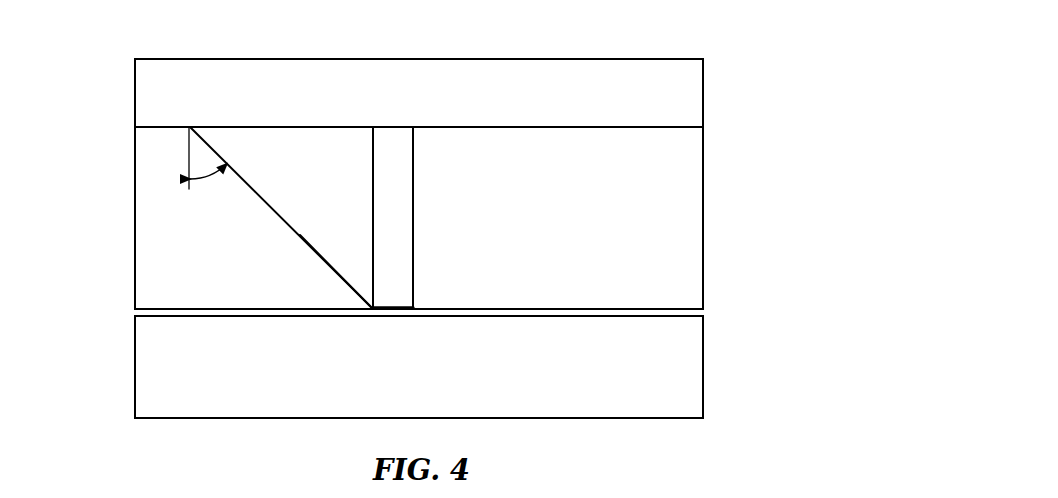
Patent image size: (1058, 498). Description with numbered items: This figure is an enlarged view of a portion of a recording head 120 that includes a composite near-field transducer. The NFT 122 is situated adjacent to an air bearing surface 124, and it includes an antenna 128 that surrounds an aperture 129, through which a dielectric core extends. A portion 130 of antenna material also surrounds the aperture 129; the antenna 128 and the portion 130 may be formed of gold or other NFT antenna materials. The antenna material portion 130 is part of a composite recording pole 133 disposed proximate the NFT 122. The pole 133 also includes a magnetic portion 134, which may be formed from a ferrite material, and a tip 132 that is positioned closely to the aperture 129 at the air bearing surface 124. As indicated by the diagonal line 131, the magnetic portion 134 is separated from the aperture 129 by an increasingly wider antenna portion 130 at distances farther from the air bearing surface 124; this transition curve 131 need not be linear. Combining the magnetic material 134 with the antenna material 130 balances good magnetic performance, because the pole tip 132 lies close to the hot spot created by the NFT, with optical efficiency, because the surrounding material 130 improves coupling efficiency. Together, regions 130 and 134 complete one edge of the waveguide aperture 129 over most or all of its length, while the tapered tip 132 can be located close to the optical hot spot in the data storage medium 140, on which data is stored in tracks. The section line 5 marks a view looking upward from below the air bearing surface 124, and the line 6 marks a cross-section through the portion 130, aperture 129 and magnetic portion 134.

The recording head 120 is at (690, 43).
The NFT 122 is at (672, 105).
The air bearing surface 124 is at (660, 310).
The antenna 128 is at (530, 200).
The aperture 129 is at (391, 299).
The antenna material portion 130 is at (344, 216).
The diagonal line 131 is at (244, 176).
The tip 132 is at (355, 305).
The composite recording pole 133 is at (152, 103).
The magnetic portion 134 is at (206, 287).
The data storage medium 140 is at (617, 403).
The section 5- 5 is at (135, 309).
The line 6- 6 is at (273, 200).